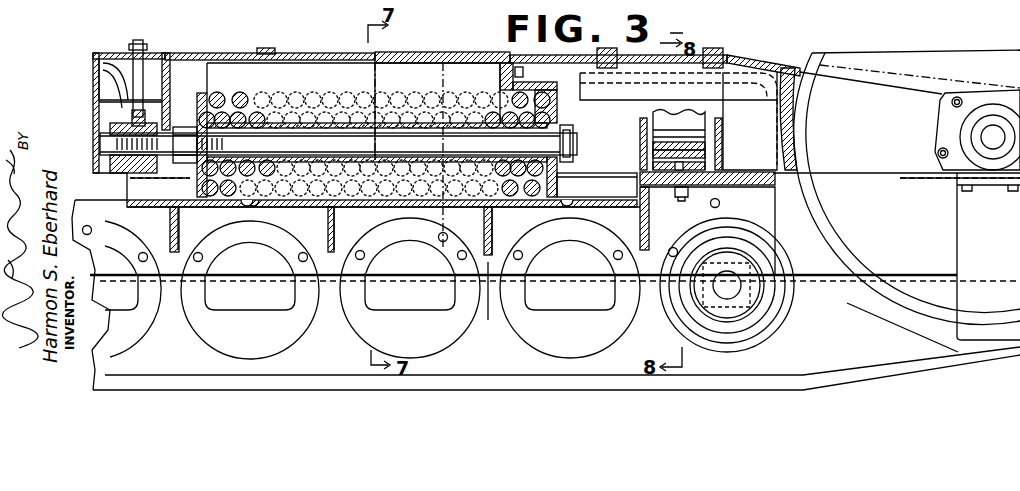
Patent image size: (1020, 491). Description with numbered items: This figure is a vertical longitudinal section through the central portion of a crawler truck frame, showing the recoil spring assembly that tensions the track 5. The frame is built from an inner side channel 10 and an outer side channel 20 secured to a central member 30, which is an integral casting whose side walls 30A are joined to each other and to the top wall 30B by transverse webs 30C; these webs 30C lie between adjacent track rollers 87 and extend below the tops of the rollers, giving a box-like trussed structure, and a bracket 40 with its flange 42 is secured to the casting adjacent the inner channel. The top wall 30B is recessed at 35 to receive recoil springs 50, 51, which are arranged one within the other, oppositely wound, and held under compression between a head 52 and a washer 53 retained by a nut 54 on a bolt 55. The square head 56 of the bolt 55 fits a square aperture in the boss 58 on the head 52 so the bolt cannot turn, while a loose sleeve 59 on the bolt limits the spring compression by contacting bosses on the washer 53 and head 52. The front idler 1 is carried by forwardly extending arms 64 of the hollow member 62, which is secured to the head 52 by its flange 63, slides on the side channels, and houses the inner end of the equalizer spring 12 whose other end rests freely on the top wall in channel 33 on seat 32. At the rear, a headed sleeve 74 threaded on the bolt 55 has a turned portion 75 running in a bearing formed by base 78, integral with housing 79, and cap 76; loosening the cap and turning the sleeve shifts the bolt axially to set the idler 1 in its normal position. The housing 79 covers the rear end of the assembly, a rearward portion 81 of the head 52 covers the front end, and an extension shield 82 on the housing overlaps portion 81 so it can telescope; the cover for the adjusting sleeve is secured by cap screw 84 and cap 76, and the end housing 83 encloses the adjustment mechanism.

The front idler 1 is at (823, 63).
The track 5 is at (775, 353).
The inner side channel 10 is at (556, 220).
The equalizer spring 12 is at (697, 123).
The outer side channel 20 is at (890, 0).
The central member 30 is at (760, 212).
The side walls 30A is at (487, 299).
The top wall 30B is at (286, 207).
The transverse webs 30C is at (433, 230).
The seat 32 is at (722, 170).
The channel 33 is at (724, 140).
The recess 35 is at (595, 192).
The bracket 40 is at (395, 270).
The flange 42 is at (263, 267).
The recoil spring 50 is at (242, 100).
The recoil spring 51 is at (257, 123).
The head 52 is at (548, 100).
The washer 53 is at (204, 93).
The nut 54 is at (183, 128).
The bolt 55 is at (377, 113).
The square head 56 is at (578, 135).
The boss 58 is at (580, 162).
The sleeve 59 is at (393, 130).
The member 62 is at (760, 57).
The flange 63 is at (497, 62).
The forwardly extending arms 64 is at (915, 90).
The headed sleeve 74 is at (110, 128).
The turned central portion 75 is at (130, 117).
The cap 76 is at (130, 127).
The base 78 is at (125, 165).
The housing 79 is at (253, 53).
The portion 81 is at (462, 55).
The extension shield 82 is at (385, 52).
The end housing 83 is at (107, 53).
The cap screw 84 is at (140, 46).
The track rollers 87 is at (268, 340).